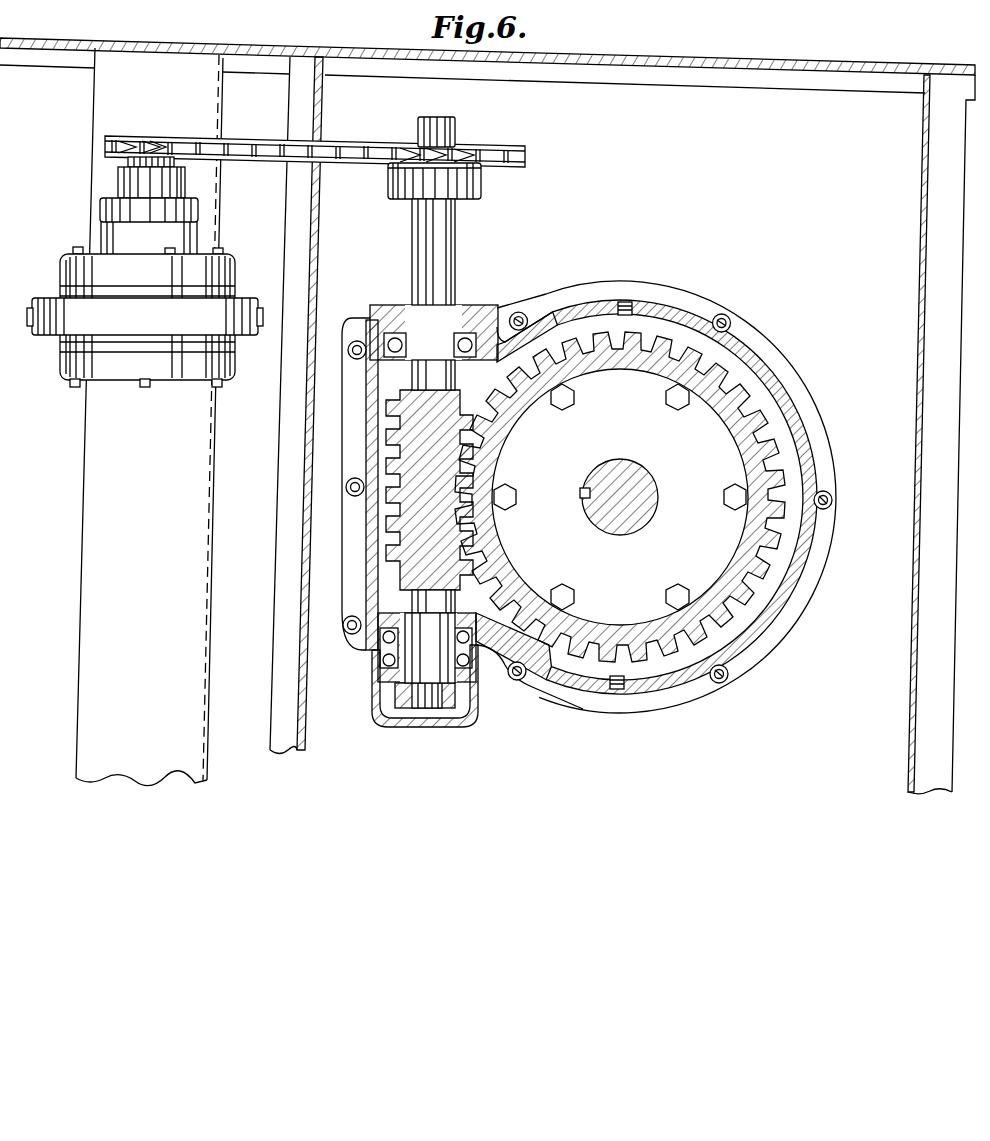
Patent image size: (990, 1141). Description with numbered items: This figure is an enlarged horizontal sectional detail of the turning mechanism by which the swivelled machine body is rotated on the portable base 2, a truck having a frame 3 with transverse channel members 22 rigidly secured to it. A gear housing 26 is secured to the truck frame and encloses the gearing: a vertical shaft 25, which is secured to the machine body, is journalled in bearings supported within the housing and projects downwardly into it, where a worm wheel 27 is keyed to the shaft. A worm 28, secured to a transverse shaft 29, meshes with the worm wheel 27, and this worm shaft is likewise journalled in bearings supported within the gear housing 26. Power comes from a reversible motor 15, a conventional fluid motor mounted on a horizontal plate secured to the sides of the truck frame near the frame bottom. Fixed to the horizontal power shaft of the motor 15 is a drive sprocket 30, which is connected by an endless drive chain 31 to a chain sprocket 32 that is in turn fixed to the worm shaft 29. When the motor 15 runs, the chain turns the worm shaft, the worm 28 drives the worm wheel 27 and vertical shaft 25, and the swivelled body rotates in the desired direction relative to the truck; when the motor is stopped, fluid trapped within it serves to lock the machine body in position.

The portable base 2 is at (25, 42).
The frame 3 is at (340, 52).
The reversible motor 15 is at (72, 348).
The transverse channel members 22 is at (312, 262).
The vertical shaft 25 is at (640, 488).
The gear housing 26 is at (767, 367).
The worm wheel 27 is at (670, 342).
The worm 28 is at (470, 478).
The transverse shaft 29 is at (455, 278).
The drive sprocket 30 is at (168, 147).
The endless drive chain 31 is at (352, 142).
The chain sprocket 32 is at (500, 158).